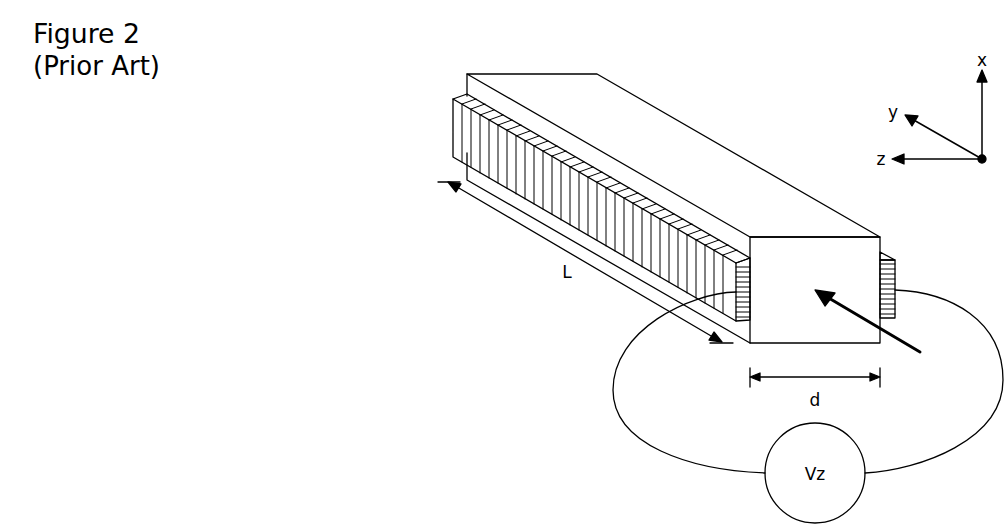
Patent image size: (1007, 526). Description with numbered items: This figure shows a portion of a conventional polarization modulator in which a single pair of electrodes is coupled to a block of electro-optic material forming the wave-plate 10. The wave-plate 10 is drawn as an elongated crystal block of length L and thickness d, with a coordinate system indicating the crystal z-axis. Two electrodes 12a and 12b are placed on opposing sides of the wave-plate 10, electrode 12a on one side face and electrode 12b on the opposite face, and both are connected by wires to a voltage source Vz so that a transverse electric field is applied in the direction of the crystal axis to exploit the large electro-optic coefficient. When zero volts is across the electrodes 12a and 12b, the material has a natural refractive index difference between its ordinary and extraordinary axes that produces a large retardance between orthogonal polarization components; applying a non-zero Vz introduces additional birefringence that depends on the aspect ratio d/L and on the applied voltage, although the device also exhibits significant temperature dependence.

The wave-plate 10 is at (540, 74).
The electrode 12a is at (453, 132).
The electrode 12b is at (895, 274).